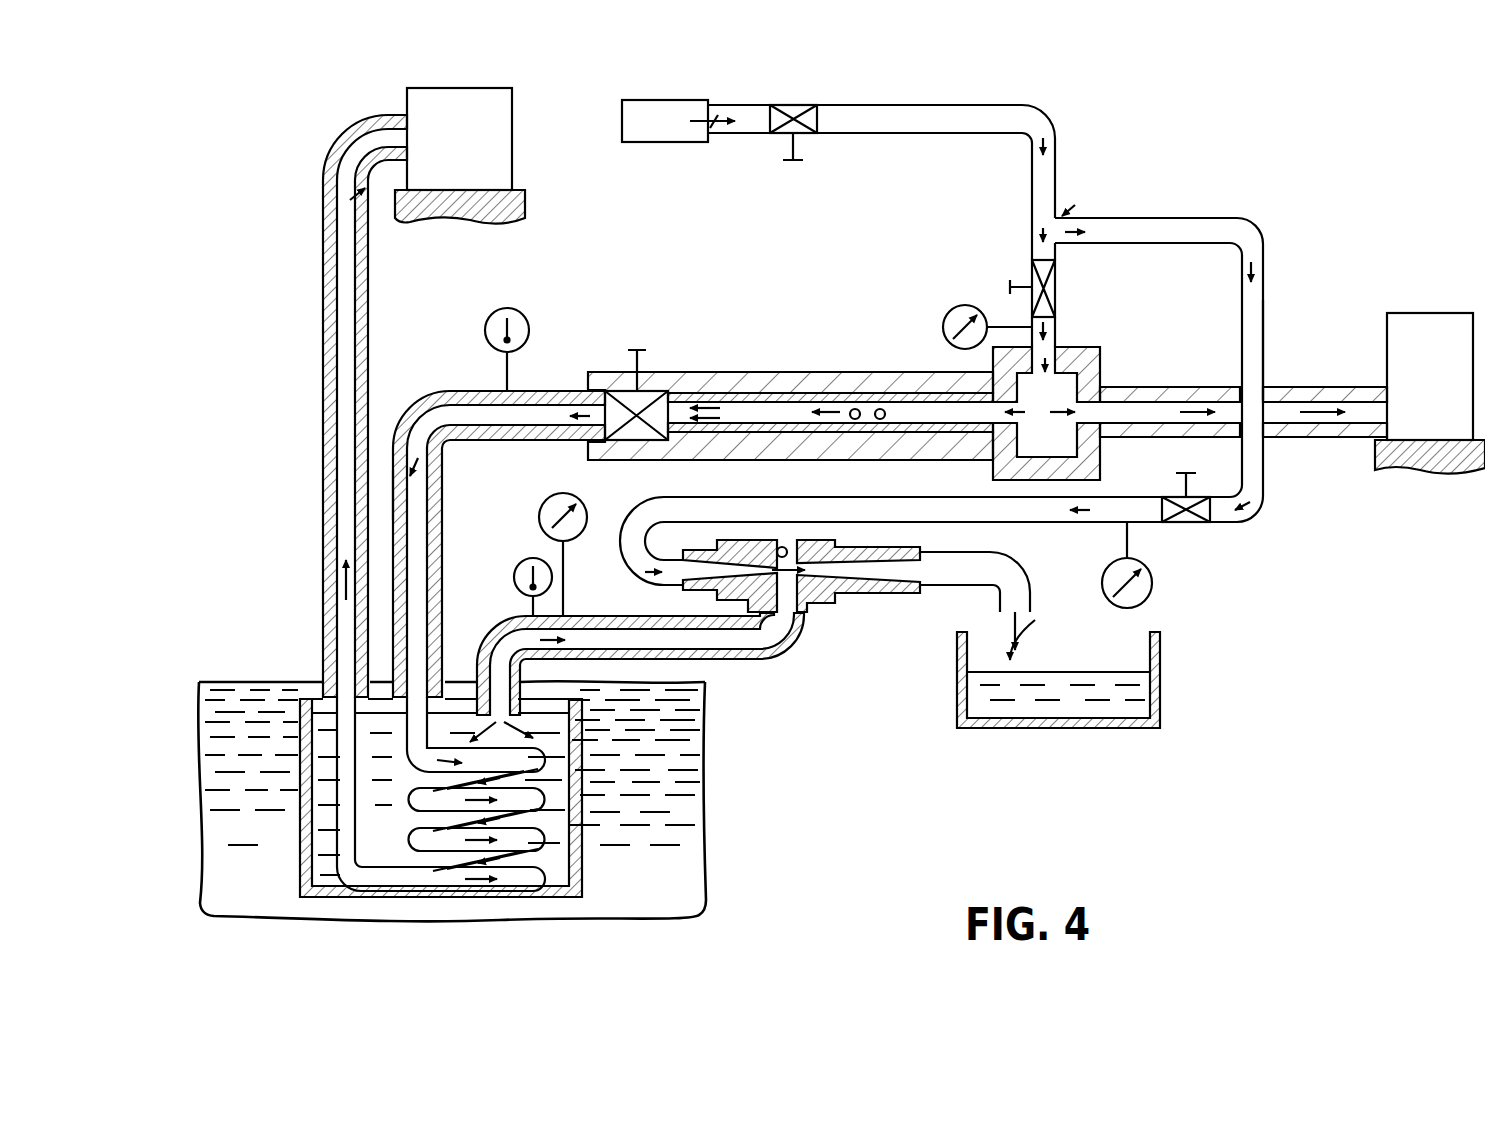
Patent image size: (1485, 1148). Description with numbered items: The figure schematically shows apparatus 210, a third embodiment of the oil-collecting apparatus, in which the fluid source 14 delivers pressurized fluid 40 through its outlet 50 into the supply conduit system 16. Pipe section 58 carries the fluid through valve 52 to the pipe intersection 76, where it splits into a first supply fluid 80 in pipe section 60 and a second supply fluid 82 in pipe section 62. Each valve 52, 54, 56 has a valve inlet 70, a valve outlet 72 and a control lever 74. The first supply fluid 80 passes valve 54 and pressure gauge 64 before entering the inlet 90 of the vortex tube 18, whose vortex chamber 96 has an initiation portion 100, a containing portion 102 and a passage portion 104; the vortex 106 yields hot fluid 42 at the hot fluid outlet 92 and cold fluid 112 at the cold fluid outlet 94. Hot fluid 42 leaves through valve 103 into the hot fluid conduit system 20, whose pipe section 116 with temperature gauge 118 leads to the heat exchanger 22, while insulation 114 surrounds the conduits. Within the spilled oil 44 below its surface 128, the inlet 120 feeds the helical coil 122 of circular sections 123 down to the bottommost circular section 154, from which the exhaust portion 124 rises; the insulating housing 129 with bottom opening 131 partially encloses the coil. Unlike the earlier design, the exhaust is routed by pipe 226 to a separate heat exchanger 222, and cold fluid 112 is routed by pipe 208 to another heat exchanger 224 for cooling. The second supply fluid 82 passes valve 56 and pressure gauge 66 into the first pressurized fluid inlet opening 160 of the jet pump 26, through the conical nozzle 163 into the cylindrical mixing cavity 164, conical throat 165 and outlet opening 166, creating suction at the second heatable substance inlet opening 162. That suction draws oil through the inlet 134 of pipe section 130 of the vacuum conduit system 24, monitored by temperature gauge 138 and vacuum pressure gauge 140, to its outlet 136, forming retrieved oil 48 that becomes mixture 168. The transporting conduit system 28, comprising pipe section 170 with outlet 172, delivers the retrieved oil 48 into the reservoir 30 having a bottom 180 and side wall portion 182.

The heat exchanger 222 is at (436, 148).
The heat exchanger 224 is at (1408, 392).
The fluid source 14 is at (632, 146).
The insulation 114 is at (323, 300).
The pipe section 116 is at (400, 490).
The hot fluid conduit system 20 is at (395, 415).
The hot fluid 42 is at (323, 192).
The pipe section 58 is at (905, 135).
The pressurized fluid 40 is at (685, 142).
The outlet 50 is at (715, 135).
The valve 52 is at (777, 135).
The valve inlet 70 is at (762, 135).
The control lever 74 is at (800, 165).
The valve outlet 72 is at (830, 135).
The valve 54 is at (1058, 280).
The valve 56 is at (1200, 525).
The pressure gauge 64 is at (948, 312).
The supply conduit system 16 is at (1177, 216).
The pipe section 62 is at (1265, 270).
The pipe intersection 76 is at (1062, 214).
The apparatus 210 is at (1210, 180).
The second supply fluid 82 is at (1075, 215).
The first supply fluid 80 is at (1040, 230).
The pipe section 60 is at (1062, 330).
The initiation portion 100 is at (1090, 470).
The inlet 90 is at (1060, 345).
The passage portion 104 is at (1130, 365).
The cold fluid outlet 94 is at (1180, 387).
The cold fluid 112 is at (1260, 405).
The pipe 208 is at (1330, 440).
The vortex chamber 96 is at (762, 370).
The containing portion 102 is at (770, 390).
The valve 103 is at (580, 380).
The vortex tube 18 is at (865, 392).
The vortex 106 is at (880, 395).
The hot fluid outlet 92 is at (640, 390).
The temperature gauge 118 is at (495, 312).
The vacuum pressure gauge 140 is at (545, 500).
The temperature gauge 138 is at (520, 565).
The pressure gauge 66 is at (1150, 598).
The first pressurized fluid inlet opening 160 is at (672, 522).
The conical nozzle 163 is at (738, 560).
The cylindrical mixing cavity 164 is at (786, 555).
The conical throat 165 is at (900, 555).
The outlet opening 166 is at (958, 555).
The jet pump 26 is at (890, 640).
The transporting conduit system 28 is at (1030, 576).
The mixture 168 is at (1005, 552).
The outlet 172 is at (1040, 585).
The pipe section 170 is at (890, 598).
The second heatable substance inlet opening 162 is at (795, 630).
The reservoir 30 is at (1165, 697).
The side wall portion 182 is at (1162, 650).
The bottom 180 is at (1100, 728).
The retrieved oil 48 is at (510, 605).
The vacuum conduit system 24 is at (490, 610).
The inlet 134 is at (478, 660).
The pipe section 130 is at (592, 640).
The outlet 136 is at (745, 665).
The surface 128 is at (215, 680).
The spilled oil 44 is at (675, 766).
The exhaust portion 124 is at (300, 830).
The heat exchanger 22 is at (552, 839).
The helical coil 122 is at (548, 800).
The circular sections 123 is at (470, 786).
The bottom opening 131 is at (535, 912).
The bottommost circular section 154 is at (540, 930).
The insulating housing 129 is at (290, 900).
The inlet 120 is at (420, 700).
The pipe 226 is at (410, 690).